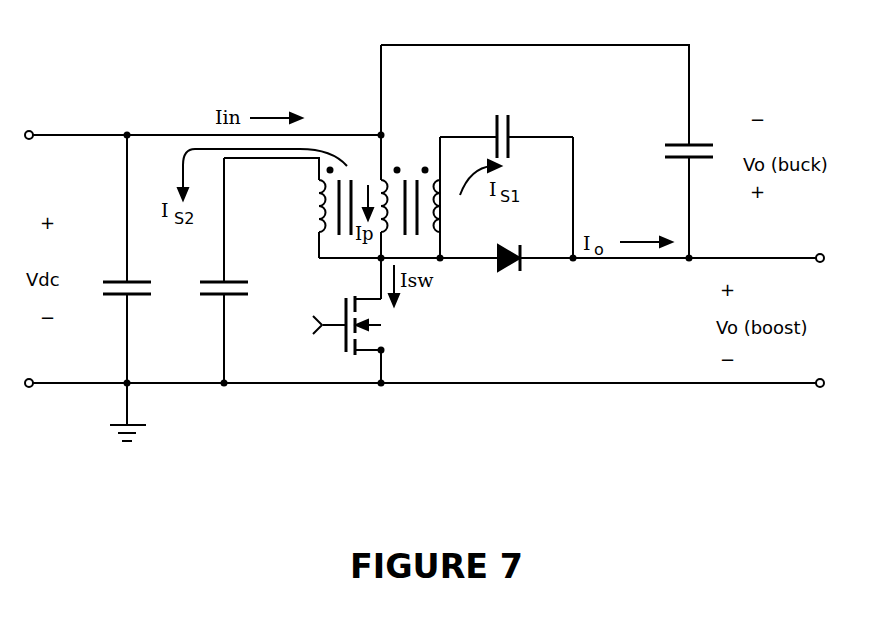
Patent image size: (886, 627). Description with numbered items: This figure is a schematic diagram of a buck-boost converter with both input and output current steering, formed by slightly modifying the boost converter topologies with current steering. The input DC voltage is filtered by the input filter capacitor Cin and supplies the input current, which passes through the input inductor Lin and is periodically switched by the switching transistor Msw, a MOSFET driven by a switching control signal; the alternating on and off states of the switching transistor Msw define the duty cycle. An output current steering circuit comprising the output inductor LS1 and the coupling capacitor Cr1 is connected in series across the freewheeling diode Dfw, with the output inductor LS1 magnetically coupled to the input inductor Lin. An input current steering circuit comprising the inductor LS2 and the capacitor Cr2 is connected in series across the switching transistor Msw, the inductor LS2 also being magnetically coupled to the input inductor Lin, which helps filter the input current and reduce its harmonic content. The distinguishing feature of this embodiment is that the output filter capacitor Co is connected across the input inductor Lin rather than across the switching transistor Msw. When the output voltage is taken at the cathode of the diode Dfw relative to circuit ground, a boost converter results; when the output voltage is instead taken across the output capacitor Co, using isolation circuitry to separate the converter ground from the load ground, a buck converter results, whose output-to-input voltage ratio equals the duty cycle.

The input filter capacitor Cin is at (133, 275).
The capacitor Cr2 is at (231, 275).
The inductor LS2 is at (296, 204).
The input inductor Lin is at (399, 187).
The output inductor LS1 is at (456, 209).
The coupling capacitor Cr1 is at (520, 132).
The output filter capacitor Co is at (692, 167).
The freewheeling diode Dfw is at (511, 275).
The switching transistor Msw is at (357, 331).